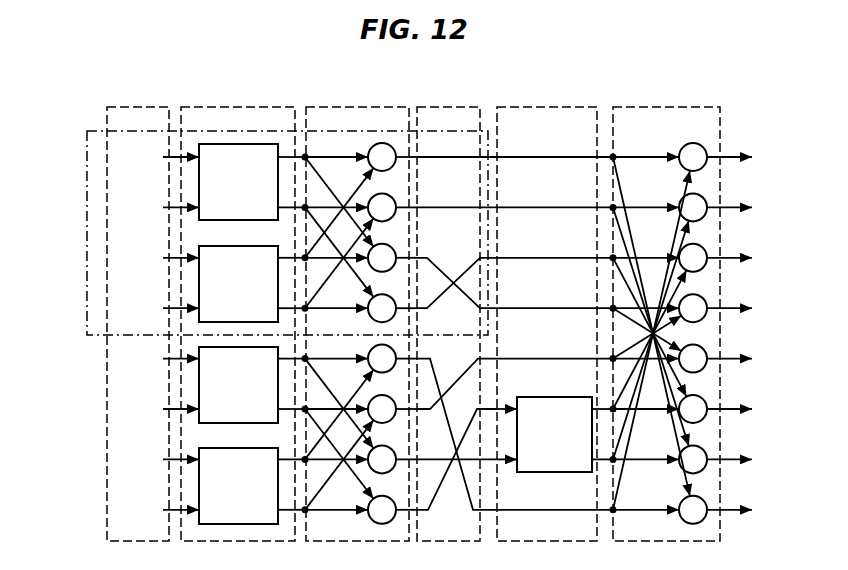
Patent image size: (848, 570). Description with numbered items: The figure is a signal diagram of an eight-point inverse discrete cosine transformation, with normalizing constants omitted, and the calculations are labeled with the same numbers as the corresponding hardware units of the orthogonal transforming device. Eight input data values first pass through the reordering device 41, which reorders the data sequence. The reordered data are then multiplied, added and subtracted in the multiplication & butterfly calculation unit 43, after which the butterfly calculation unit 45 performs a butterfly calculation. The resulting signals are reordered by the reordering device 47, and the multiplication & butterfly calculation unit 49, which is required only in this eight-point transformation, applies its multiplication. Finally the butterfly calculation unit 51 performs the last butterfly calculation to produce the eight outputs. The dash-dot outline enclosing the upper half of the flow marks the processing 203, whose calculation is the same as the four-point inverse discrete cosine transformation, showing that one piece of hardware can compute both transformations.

The reordering device 41 is at (130, 107).
The multiplication & butterfly calculation unit 43 is at (237, 107).
The butterfly calculation unit 45 is at (350, 107).
The reordering device 47 is at (455, 107).
The multiplication & butterfly calculation unit 49 is at (552, 107).
The butterfly calculation unit 51 is at (663, 107).
The processing 203 is at (87, 145).